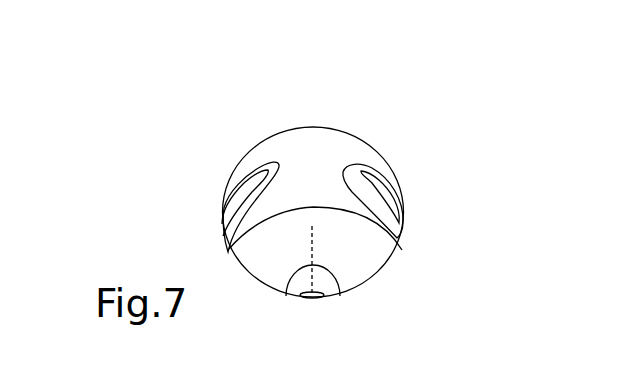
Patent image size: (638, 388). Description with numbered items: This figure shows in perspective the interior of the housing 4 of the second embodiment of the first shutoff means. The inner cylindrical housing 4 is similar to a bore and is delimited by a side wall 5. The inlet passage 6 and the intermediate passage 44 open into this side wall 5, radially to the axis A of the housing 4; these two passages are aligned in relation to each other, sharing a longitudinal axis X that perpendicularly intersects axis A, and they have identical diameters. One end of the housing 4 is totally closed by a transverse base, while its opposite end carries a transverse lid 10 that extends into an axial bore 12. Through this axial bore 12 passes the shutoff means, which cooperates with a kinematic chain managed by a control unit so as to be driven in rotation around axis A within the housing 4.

The housing 4 is at (327, 223).
The side wall 5 is at (304, 154).
The inlet passage 6 is at (244, 183).
The transverse lid 10 is at (360, 262).
The axial bore 12 is at (320, 283).
The intermediate passage 44 is at (380, 190).